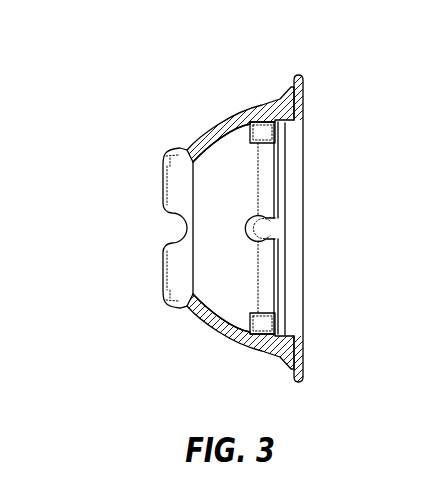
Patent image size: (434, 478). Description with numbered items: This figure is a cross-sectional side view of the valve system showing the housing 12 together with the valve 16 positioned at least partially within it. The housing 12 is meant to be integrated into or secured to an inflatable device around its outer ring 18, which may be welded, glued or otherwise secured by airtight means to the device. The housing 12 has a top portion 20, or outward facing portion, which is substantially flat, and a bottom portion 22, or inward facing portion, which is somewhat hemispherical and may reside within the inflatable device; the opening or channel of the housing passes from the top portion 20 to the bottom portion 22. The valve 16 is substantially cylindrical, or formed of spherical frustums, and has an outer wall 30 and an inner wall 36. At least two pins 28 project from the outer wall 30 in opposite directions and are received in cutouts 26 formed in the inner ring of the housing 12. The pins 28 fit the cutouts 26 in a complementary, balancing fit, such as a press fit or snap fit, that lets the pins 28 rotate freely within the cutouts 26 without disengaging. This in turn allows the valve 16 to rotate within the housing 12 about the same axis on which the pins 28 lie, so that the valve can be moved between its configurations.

The housing 12 is at (131, 104).
The valve 16 is at (232, 183).
The outer ring 18 is at (277, 340).
The top portion 20 is at (305, 347).
The bottom portion 22 is at (163, 273).
The cutouts 26 is at (275, 102).
The pin 28 is at (280, 131).
The outer wall 30 is at (235, 137).
The inner wall 36 is at (226, 322).